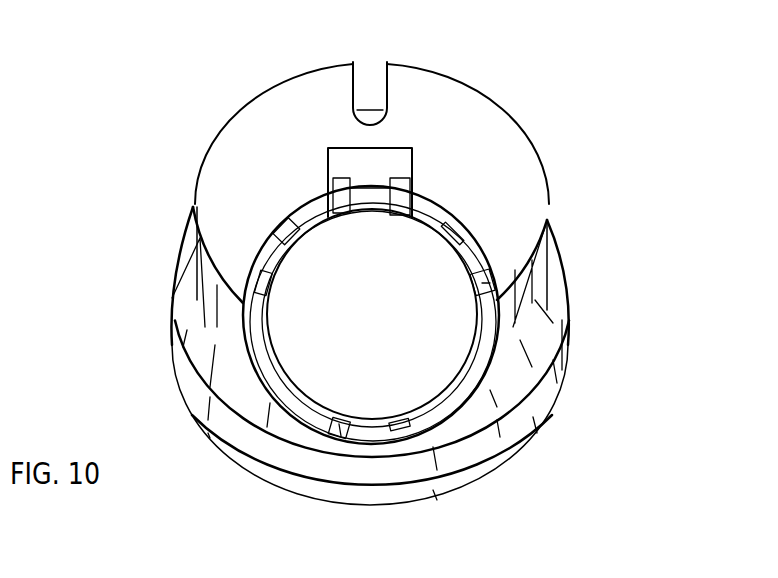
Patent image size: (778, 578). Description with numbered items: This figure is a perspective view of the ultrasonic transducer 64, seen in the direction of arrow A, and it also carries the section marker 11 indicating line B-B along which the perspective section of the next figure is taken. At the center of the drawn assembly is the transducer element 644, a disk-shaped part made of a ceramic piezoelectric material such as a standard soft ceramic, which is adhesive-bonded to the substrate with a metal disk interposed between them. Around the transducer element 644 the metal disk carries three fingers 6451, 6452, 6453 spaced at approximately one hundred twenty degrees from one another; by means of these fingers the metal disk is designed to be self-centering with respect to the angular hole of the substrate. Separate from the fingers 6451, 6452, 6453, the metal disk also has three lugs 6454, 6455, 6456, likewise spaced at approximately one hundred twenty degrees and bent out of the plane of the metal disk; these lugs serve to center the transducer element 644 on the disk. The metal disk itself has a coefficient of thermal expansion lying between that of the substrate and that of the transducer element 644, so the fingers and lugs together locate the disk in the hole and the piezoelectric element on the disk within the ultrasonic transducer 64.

The ultrasonic transducer 64 is at (570, 218).
The transducer element 644 is at (455, 361).
The finger 6451 is at (484, 286).
The finger 6452 is at (334, 438).
The finger 6453 is at (276, 237).
The lug 6454 is at (408, 428).
The lug 6455 is at (262, 289).
The lug 6456 is at (447, 225).
The section line for FIG. 11 is at (533, 150).